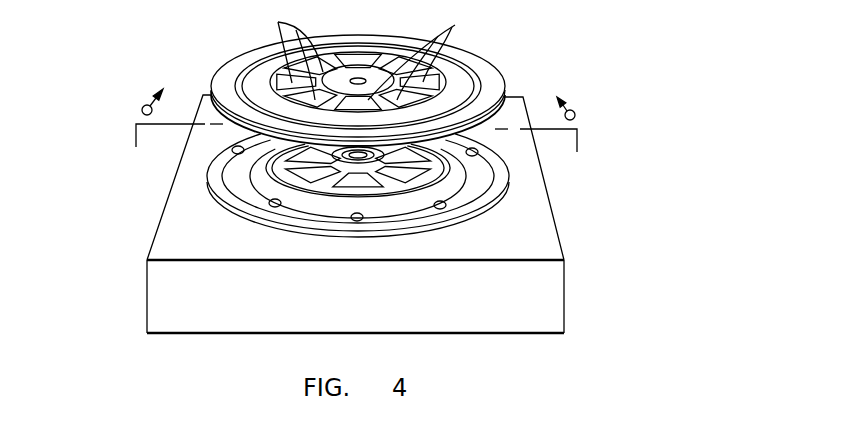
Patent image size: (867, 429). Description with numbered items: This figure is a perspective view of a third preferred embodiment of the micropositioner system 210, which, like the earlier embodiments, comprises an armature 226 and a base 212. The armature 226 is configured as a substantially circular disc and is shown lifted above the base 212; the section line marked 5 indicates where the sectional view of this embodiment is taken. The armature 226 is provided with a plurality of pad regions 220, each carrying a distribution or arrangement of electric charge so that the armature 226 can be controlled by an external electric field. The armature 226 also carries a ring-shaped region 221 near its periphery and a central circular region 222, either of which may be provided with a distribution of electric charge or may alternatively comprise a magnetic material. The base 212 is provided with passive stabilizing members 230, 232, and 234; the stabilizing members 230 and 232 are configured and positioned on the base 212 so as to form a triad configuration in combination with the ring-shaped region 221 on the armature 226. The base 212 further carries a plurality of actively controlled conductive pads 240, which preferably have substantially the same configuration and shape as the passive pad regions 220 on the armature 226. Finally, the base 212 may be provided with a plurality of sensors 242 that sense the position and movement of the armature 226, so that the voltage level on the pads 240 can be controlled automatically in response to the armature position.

The section line 5- 5 is at (352, 120).
The micropositioner system 210 is at (104, 60).
The base 212 is at (177, 288).
The pad regions 220 is at (279, 23).
The ring-shaped region 221 is at (240, 72).
The central circular region 222 is at (359, 77).
The armature 226 is at (220, 82).
The passive stabilizing member 230 is at (233, 198).
The passive stabilizing member 232 is at (250, 168).
The passive stabilizing member 234 is at (387, 163).
The actively controlled conductive pads 240 is at (283, 162).
The sensors 242 is at (238, 150).